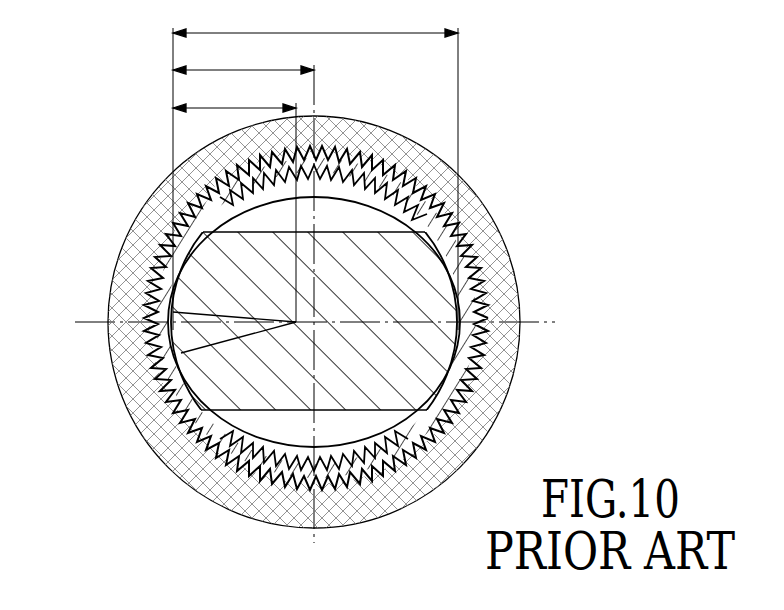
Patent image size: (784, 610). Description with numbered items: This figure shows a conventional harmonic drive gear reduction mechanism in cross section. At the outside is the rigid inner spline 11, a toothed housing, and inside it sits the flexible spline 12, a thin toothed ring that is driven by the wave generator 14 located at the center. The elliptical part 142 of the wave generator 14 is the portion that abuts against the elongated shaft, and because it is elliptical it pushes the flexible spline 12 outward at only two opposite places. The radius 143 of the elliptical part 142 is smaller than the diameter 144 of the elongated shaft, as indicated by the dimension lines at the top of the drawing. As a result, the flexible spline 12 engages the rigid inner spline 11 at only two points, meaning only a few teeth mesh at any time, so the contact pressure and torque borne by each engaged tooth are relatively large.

The rigid inner spline 11 is at (480, 222).
The flexible spline 12 is at (470, 283).
The wave generator 14 is at (365, 243).
The elliptical part 142 is at (170, 320).
The radius of the elliptical part 143 is at (234, 200).
The diameter of the elongated shaft 144 is at (315, 166).